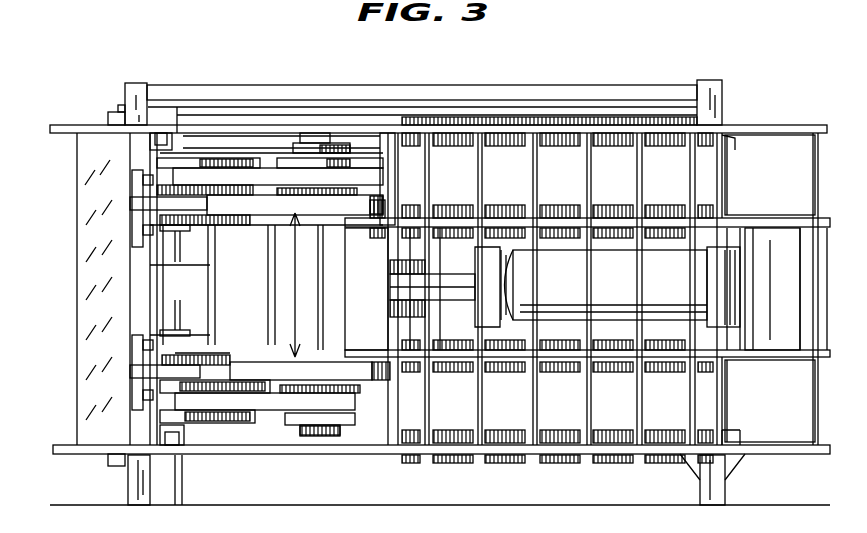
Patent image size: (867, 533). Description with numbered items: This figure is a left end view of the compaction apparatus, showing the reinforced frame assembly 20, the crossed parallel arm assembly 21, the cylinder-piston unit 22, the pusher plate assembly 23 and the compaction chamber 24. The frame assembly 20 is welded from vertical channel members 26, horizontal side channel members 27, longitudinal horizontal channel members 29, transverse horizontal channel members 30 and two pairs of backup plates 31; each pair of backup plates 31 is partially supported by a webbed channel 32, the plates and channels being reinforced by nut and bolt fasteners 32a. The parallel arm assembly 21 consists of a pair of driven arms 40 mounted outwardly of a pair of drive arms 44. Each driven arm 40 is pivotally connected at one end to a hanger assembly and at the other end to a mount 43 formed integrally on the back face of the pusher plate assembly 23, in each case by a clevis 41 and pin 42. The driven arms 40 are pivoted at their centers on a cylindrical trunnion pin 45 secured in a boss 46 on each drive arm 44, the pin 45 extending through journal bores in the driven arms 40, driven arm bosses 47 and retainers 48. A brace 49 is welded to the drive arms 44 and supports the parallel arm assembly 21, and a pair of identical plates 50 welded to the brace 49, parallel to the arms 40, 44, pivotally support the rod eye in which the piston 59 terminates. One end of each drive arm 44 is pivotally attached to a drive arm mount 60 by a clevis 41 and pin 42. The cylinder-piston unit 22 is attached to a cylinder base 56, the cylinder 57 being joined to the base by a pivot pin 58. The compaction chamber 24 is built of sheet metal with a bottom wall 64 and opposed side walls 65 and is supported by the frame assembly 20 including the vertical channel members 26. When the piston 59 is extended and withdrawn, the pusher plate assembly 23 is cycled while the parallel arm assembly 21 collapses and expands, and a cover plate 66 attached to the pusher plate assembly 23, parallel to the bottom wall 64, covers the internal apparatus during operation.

The reinforced frame assembly 20 is at (276, 87).
The crossed parallel arm assembly 21 is at (302, 285).
The cylinder-piston unit 22 is at (622, 289).
The pusher plate assembly 23 is at (178, 298).
The compaction chamber 24 is at (248, 334).
The vertical channel members 26 is at (136, 83).
The horizontal side channel members 27 is at (115, 118).
The longitudinal horizontal channel members 29 is at (165, 140).
The transverse horizontal channel members 30 is at (380, 108).
The backup plates 31 is at (766, 125).
The webbed channel 32 is at (525, 160).
The nut and bolt fasteners 32a is at (495, 145).
The driven arm 40 is at (262, 175).
The clevis 41 is at (250, 195).
The pin 42 is at (183, 155).
The mount 43 is at (143, 178).
The drive arm 44 is at (338, 218).
The cylindrical trunnion pin 45 is at (312, 150).
The boss 46 is at (260, 222).
The driven arm boss 47 is at (312, 175).
The retainer 48 is at (345, 150).
The brace 49 is at (270, 259).
The plates 50 is at (390, 308).
The cylinder base 56 is at (745, 262).
The cylinder 57 is at (572, 262).
The pivot pin 58 is at (712, 258).
The piston 59 is at (453, 274).
The drive arm mount 60 is at (135, 210).
The bottom wall 64 is at (225, 470).
The side walls 65 is at (130, 485).
The cover plate 66 is at (238, 110).